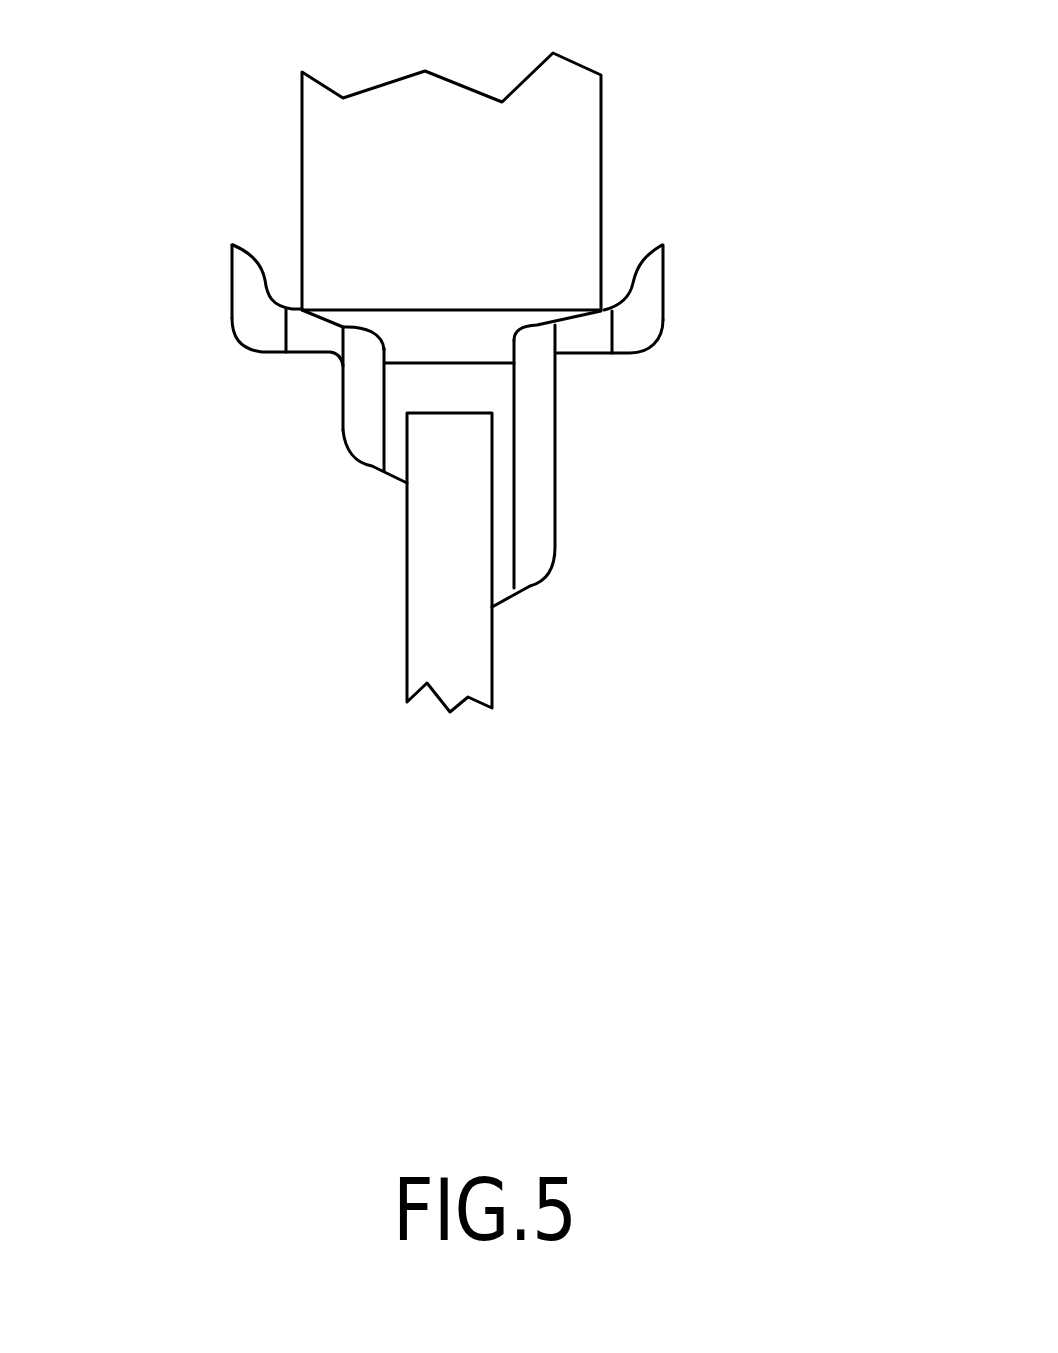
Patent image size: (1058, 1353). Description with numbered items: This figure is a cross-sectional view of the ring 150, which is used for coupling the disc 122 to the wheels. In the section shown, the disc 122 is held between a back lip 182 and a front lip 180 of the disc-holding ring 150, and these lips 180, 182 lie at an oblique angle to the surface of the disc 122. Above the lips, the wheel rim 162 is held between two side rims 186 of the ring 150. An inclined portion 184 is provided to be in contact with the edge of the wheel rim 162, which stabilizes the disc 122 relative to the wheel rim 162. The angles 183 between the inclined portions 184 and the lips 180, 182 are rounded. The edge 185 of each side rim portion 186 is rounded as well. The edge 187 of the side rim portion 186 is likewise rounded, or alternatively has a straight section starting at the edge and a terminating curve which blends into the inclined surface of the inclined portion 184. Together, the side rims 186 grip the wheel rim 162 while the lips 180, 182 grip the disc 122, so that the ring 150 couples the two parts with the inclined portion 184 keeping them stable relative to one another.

The disc 122 is at (477, 657).
The ring 150 is at (708, 471).
The wheel rim 162 is at (487, 203).
The front lip 180 is at (533, 586).
The back lip 182 is at (372, 470).
The angles 183 is at (338, 357).
The inclined portion 184 is at (309, 337).
The edge 185 is at (243, 343).
The side rims 186 is at (232, 313).
The edge 187 is at (267, 296).